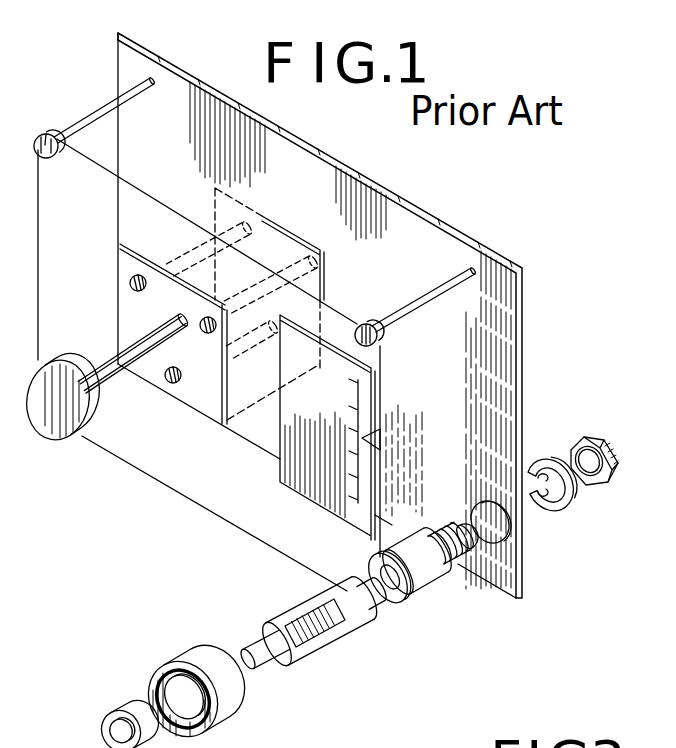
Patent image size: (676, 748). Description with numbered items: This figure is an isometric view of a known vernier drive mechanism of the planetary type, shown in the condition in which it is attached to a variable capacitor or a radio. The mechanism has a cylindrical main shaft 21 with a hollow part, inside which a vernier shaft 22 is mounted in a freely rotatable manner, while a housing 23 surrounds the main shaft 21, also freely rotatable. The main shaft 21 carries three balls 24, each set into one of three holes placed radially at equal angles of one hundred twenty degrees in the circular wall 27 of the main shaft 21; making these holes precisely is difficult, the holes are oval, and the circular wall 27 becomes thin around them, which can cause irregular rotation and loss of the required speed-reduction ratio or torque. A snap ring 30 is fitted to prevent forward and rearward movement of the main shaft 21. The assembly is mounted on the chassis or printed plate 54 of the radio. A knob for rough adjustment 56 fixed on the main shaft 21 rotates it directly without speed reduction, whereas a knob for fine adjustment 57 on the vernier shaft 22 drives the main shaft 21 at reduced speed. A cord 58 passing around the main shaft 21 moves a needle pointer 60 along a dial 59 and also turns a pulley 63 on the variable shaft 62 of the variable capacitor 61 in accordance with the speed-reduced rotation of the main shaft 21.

The main shaft 21 is at (288, 621).
The vernier shaft 22 is at (248, 651).
The housing 23 is at (432, 592).
The balls 24 is at (408, 604).
The circular wall 27 is at (392, 604).
The snap ring 30 is at (552, 505).
The chassis or printed plate 54 is at (463, 230).
The knob for rough adjustment 56 is at (163, 675).
The knob for fine adjustment 57 is at (116, 718).
The cord 58 is at (185, 495).
The dial 59 is at (280, 462).
The needle pointer 60 is at (380, 440).
The variable capacitor 61 is at (120, 252).
The variable shaft 62 is at (130, 372).
The pulley 63 is at (52, 437).